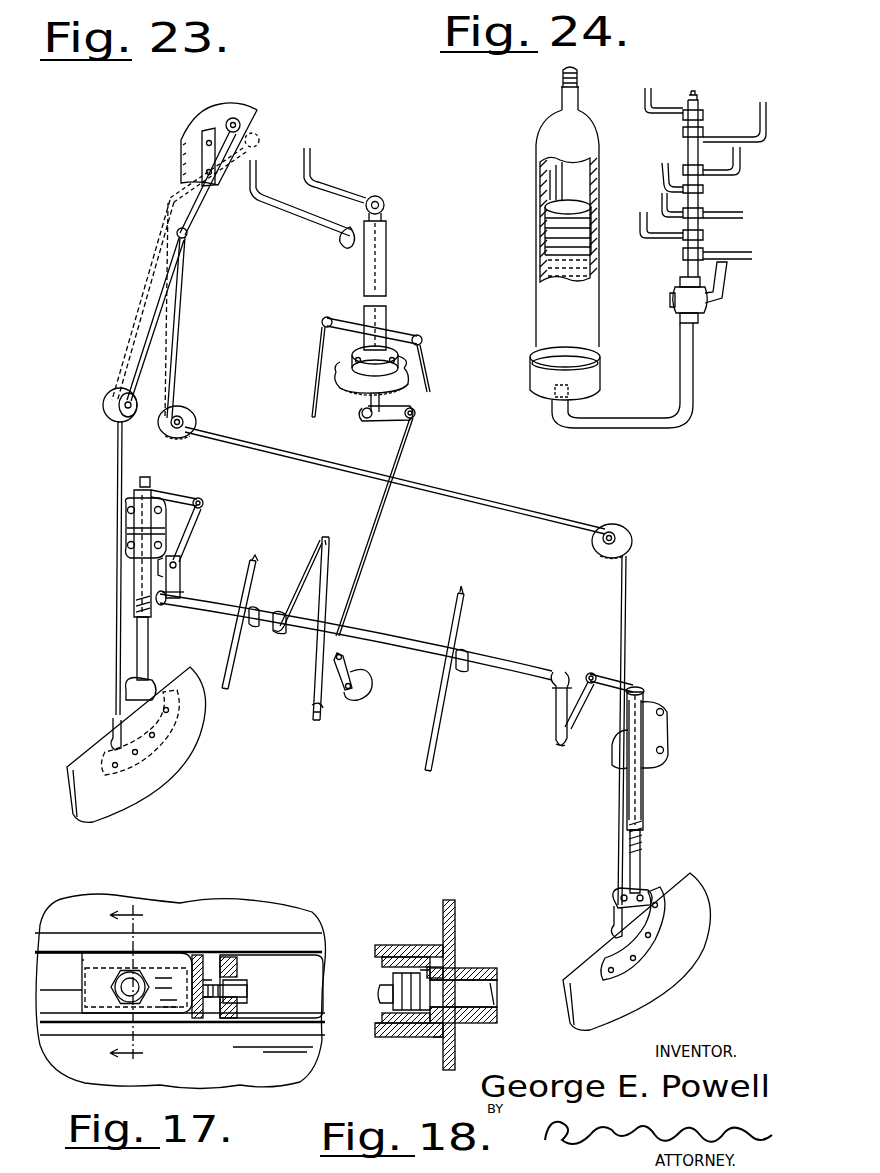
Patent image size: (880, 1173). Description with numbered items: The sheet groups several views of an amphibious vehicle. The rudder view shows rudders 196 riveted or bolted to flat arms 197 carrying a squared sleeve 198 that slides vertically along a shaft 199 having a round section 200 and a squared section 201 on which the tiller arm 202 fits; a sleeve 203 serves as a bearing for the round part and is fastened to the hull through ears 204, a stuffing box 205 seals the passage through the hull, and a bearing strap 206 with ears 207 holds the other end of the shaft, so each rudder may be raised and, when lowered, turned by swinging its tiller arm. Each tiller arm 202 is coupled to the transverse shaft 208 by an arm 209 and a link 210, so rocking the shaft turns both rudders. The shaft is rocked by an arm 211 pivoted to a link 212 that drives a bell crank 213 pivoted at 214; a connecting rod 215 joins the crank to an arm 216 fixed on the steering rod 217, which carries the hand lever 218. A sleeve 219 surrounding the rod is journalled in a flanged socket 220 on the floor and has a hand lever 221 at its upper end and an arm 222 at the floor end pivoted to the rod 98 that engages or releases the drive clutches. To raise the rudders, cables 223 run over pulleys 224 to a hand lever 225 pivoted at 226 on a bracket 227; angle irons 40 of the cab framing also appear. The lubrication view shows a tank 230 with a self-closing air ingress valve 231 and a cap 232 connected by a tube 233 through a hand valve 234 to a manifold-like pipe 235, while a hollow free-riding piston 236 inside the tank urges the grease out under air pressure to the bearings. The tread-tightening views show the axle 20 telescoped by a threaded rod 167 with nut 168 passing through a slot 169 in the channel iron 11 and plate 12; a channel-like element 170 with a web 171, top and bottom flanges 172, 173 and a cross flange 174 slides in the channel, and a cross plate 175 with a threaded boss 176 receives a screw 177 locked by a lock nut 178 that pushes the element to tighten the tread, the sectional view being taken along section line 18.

In FIG. 23, the bracket 227 is at (180, 165).
In FIG. 23, the pivot 226 is at (210, 186).
In FIG. 23, the hand lever 225 is at (182, 228).
In FIG. 23, the pulleys 224 is at (104, 409).
In FIG. 23, the cables 223 is at (117, 467).
In FIG. 23, the connecting rod 215 is at (392, 499).
In FIG. 23, the hand lever 218 is at (372, 170).
In FIG. 23, the sleeve 219 is at (385, 262).
In FIG. 23, the hand lever 221 is at (330, 232).
In FIG. 23, the arm 222 is at (362, 320).
In FIG. 23, the rod 98 is at (315, 404).
In FIG. 23, the base flange 220 is at (406, 356).
In FIG. 23, the steering rod 217 is at (371, 398).
In FIG. 23, the arm 216 is at (386, 419).
In FIG. 23, the squared sleeve 198 is at (149, 647).
In FIG. 23, the shaft 199 is at (643, 797).
In FIG. 23, the squared section 201 is at (650, 690).
In FIG. 23, the round section 200 is at (130, 523).
In FIG. 23, the stuffing box 205 is at (130, 503).
In FIG. 23, the sleeve 203 is at (130, 538).
In FIG. 23, the ears 204 is at (657, 749).
In FIG. 23, the tiller arm 202 is at (165, 489).
In FIG. 23, the links 210 is at (187, 520).
In FIG. 23, the arms 209 is at (178, 572).
In FIG. 23, the shaft 208 is at (413, 623).
In FIG. 23, the angle irons 40 is at (228, 689).
In FIG. 23, the arm 211 is at (307, 579).
In FIG. 23, the link 212 is at (324, 580).
In FIG. 23, the pivot 214 is at (361, 686).
In FIG. 23, the bell crank 213 is at (338, 707).
In FIG. 23, the rudders 196 is at (100, 746).
In FIG. 23, the flat arms 197 is at (668, 906).
In FIG. 23, the ears 207 is at (615, 900).
In FIG. 23, the bearing strap 206 is at (613, 920).
In FIG. 24, the air self-closing ingress valve 231 is at (561, 103).
In FIG. 24, the tank 230 is at (543, 262).
In FIG. 24, the hollow free riding piston 236 is at (546, 234).
In FIG. 24, the cap 232 is at (542, 388).
In FIG. 24, the tube 233 is at (681, 366).
In FIG. 24, the hand valve 234 is at (678, 308).
In FIG. 24, the feed manifold-like pipe 235 is at (704, 195).
In FIG. 17, the channel iron 11 is at (48, 1023).
In FIG. 18, the channel iron 11 is at (402, 944).
In FIG. 17, the top flange 172 is at (96, 950).
In FIG. 17, the bottom flange 173 is at (97, 1015).
In FIG. 17, the web 171 is at (162, 968).
In FIG. 17, the slot 169 is at (84, 970).
In FIG. 18, the slot 169 is at (444, 1042).
In FIG. 17, the channel-like element 170 is at (83, 990).
In FIG. 18, the channel-like element 170 is at (380, 1023).
In FIG. 17, the cross flange 174 is at (172, 1007).
In FIG. 17, the cross plate 175 is at (213, 953).
In FIG. 17, the threaded boss portion 176 is at (230, 976).
In FIG. 17, the screw 177 is at (250, 990).
In FIG. 17, the lock nut 178 is at (235, 1005).
In FIG. 17, the section line 18 is at (139, 987).
In FIG. 18, the plate 12 is at (455, 908).
In FIG. 18, the axle 20 is at (466, 968).
In FIG. 18, the threaded rod 167 is at (527, 986).
In FIG. 18, the nut 168 is at (384, 988).